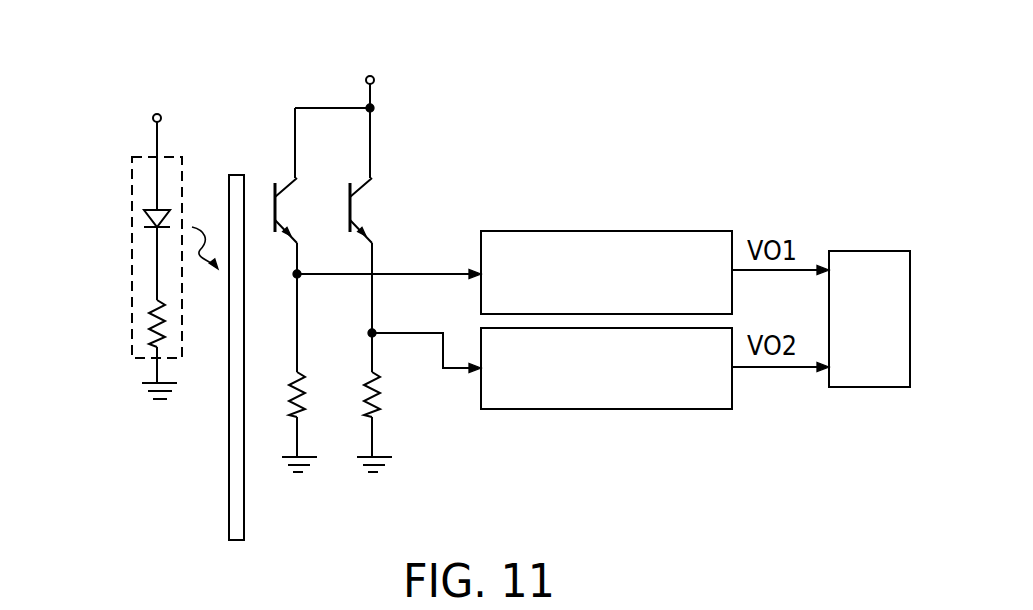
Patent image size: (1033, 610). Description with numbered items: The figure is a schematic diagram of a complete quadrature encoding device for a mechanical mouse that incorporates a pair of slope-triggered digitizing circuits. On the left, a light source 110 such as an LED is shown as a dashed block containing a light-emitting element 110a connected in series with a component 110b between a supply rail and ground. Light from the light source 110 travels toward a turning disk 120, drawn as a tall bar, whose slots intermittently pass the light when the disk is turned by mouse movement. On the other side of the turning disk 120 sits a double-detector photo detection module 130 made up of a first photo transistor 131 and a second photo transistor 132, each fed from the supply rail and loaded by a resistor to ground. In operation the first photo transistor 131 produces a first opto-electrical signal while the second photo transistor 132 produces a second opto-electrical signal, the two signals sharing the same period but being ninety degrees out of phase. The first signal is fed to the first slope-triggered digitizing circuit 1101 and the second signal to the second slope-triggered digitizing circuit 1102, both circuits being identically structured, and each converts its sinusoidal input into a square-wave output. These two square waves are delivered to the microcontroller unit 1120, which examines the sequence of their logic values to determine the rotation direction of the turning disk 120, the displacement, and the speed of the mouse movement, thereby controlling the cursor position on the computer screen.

The light source 110 is at (132, 157).
The photodiode 110a is at (152, 222).
The resistor 110b is at (150, 325).
The turning disk 120 is at (230, 497).
The double-detector photo detection module 130 is at (306, 77).
The first photo transistor 131 is at (288, 181).
The second photo transistor 132 is at (365, 203).
The first slope-triggered digitizing circuit 1101 is at (545, 231).
The second slope-triggered digitizing circuit 1102 is at (553, 409).
The microcontroller unit 1120 is at (863, 251).